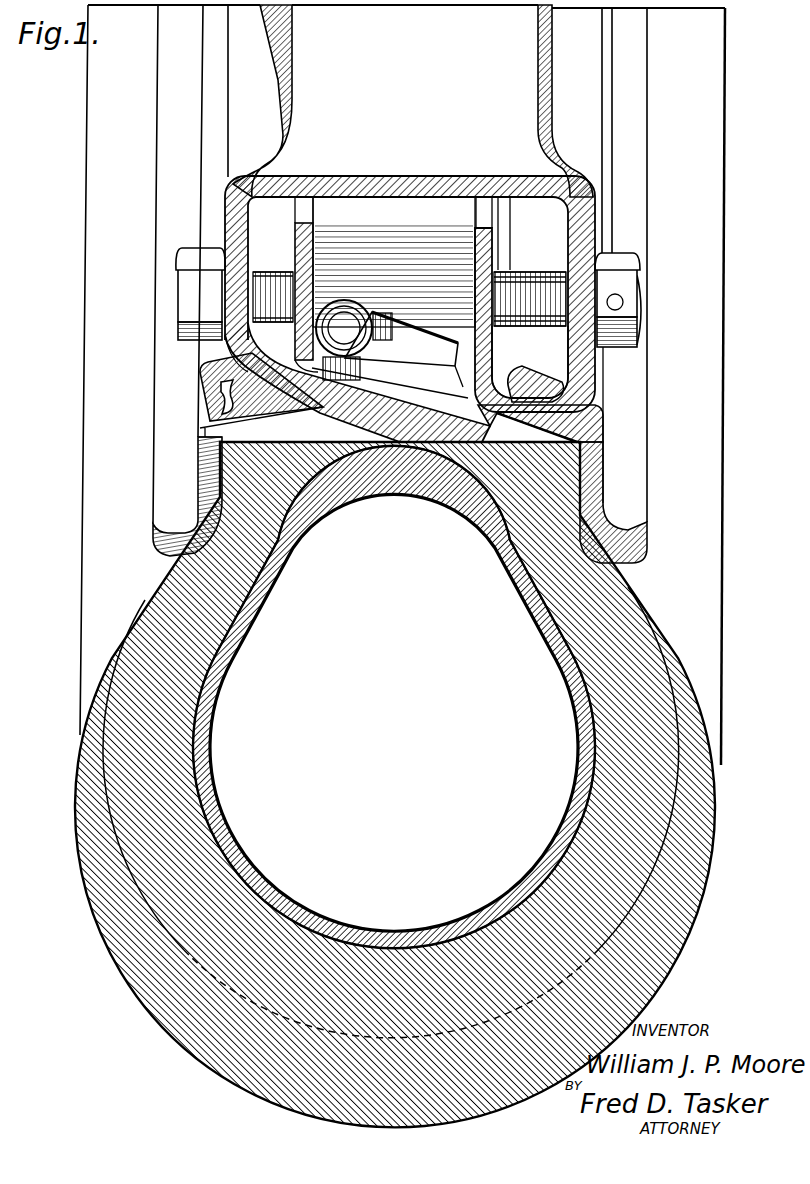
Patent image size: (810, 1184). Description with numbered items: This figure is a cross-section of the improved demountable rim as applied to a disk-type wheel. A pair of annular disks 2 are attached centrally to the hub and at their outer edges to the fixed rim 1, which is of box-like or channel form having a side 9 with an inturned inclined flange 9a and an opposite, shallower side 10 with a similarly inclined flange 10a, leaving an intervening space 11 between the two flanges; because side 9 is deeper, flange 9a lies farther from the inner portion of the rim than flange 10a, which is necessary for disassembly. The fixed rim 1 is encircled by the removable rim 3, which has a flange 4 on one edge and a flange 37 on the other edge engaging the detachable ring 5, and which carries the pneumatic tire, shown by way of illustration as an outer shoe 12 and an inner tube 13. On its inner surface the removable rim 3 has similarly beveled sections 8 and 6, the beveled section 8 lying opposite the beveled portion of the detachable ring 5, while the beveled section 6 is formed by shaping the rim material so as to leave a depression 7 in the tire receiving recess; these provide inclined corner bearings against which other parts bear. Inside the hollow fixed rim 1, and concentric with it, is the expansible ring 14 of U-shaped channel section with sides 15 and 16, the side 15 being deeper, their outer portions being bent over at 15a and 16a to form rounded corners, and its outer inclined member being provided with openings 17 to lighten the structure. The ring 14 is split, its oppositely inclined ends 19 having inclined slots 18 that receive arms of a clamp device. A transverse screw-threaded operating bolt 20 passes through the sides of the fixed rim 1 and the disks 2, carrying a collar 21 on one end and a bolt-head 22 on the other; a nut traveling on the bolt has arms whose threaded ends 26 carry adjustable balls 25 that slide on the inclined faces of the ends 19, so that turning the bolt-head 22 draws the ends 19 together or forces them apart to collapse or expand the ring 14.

The fixed rim 1 is at (443, 183).
The annular disks 2 is at (287, 74).
The demountable rim 3 is at (398, 496).
The flange 4 is at (622, 538).
The detachable ring 5 is at (180, 533).
The beveled section 6 is at (560, 419).
The depression 7 is at (535, 428).
The beveled section 8 is at (197, 373).
The side of fixed rim 9 is at (580, 334).
The flange 9a is at (592, 382).
The side of fixed rim 10 is at (257, 254).
The flange 10a is at (200, 353).
The intervening space 11 is at (357, 382).
The outer shoe 12 is at (712, 905).
The inner tube 13 is at (318, 528).
The expansible ring 14 is at (394, 262).
The side of expansible ring 15 is at (494, 258).
The bent-over corner 15a is at (463, 387).
The side of expansible ring 16 is at (293, 248).
The bent-over corner 16a is at (197, 438).
The openings 17 is at (390, 393).
The slots 18 is at (390, 346).
The inclined ends 19 is at (394, 271).
The operating bolt 20 is at (592, 248).
The collar 21 is at (626, 283).
The bolt-head 22 is at (200, 294).
The balls 25 is at (368, 300).
The arm ends 26 is at (344, 328).
The flange 37 is at (212, 411).